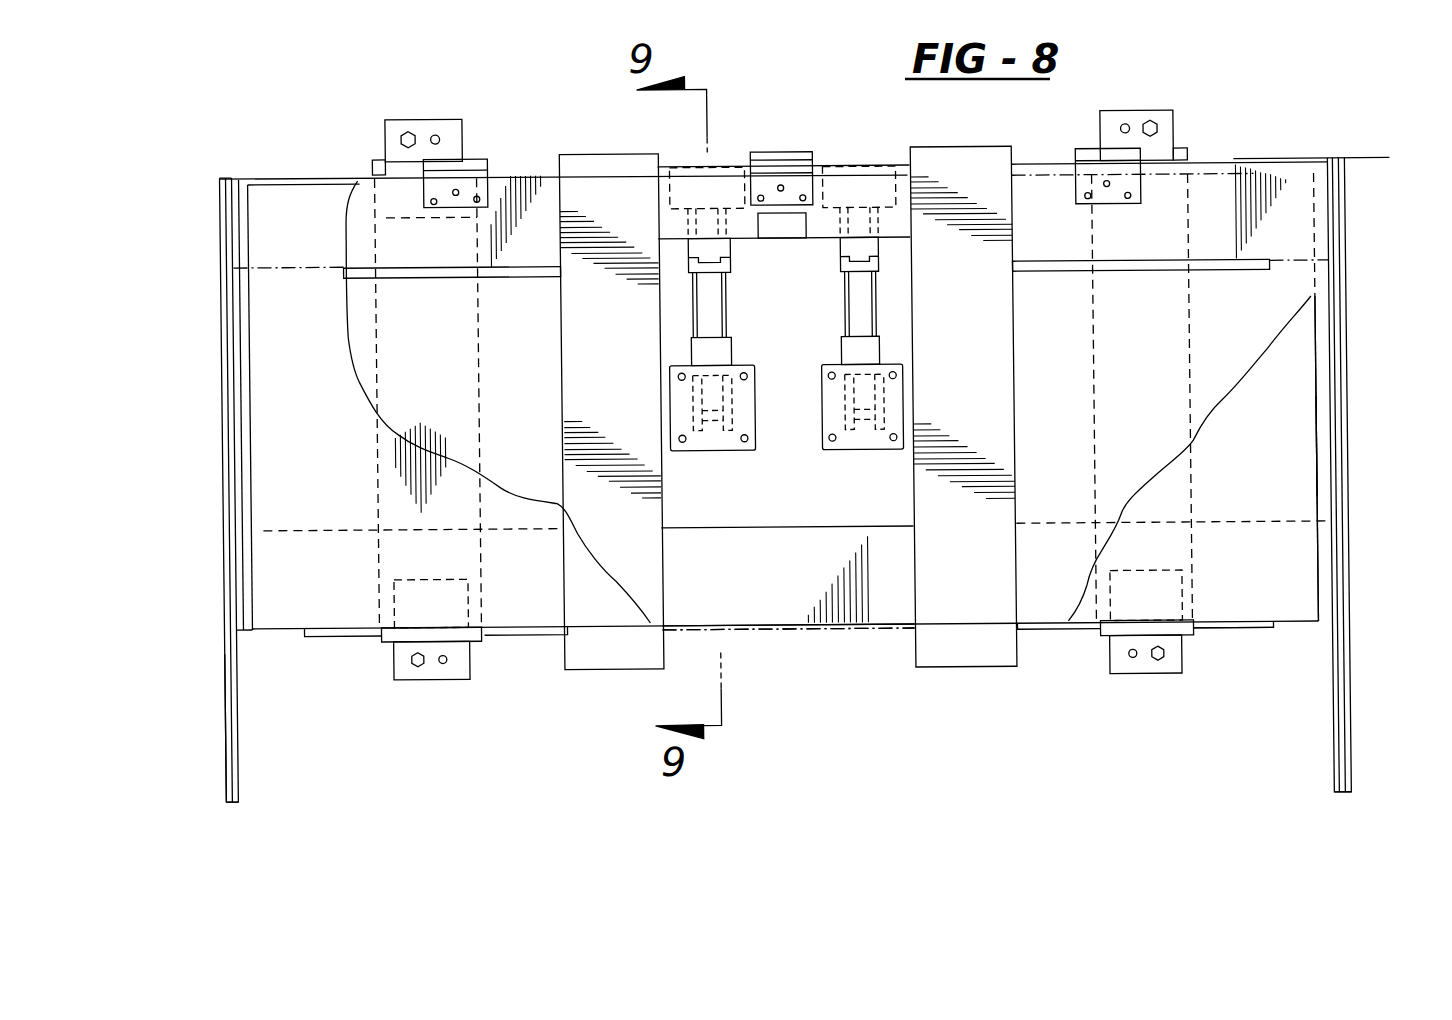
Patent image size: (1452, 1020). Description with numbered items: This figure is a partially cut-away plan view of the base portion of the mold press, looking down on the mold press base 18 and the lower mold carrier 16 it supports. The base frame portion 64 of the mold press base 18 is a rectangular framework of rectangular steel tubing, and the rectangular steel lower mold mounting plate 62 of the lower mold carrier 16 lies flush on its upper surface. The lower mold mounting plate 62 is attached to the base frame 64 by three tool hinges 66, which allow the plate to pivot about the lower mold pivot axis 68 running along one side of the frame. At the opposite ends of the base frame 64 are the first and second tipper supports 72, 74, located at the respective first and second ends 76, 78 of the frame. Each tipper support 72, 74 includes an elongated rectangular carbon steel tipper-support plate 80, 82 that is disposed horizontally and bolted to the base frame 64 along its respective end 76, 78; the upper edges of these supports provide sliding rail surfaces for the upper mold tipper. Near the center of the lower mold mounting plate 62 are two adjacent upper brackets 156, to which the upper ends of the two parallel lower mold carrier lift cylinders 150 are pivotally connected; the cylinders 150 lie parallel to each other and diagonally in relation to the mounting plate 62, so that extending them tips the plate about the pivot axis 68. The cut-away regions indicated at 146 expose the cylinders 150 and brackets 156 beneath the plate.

The lower mold carrier 16 is at (1306, 445).
The mold press base 18 is at (864, 628).
The lower mold mounting plate 62 is at (1305, 498).
The base frame portion 64 is at (770, 612).
The tool hinges 66 is at (448, 165).
The lower mold pivot axis 68 is at (1356, 152).
The first tipper support 72 is at (1358, 727).
The second tipper support 74 is at (217, 771).
The first end of base frame 76 is at (1325, 588).
The second end of base frame 78 is at (244, 585).
The first tipper-support plate 80 is at (1350, 772).
The second tipper-support plate 82 is at (227, 705).
The hydraulic cylinder assembly 146 is at (824, 458).
The lower mold carrier lift cylinders 150 is at (857, 299).
The upper brackets 156 is at (678, 402).